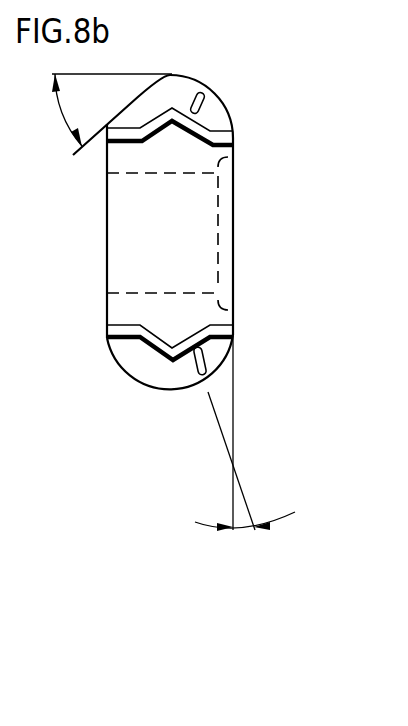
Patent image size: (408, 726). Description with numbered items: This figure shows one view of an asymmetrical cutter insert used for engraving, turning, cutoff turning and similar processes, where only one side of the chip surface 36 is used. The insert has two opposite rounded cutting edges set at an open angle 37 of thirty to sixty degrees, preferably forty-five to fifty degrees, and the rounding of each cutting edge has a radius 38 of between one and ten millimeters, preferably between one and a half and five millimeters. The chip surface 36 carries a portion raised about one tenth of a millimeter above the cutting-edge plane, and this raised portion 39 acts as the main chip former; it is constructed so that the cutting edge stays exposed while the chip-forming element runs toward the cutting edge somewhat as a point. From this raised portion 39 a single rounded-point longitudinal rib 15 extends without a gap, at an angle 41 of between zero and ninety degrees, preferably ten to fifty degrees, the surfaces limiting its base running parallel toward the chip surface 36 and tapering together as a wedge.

The longitudinal rib 15 is at (205, 103).
The chip surface 36 is at (155, 370).
The open angle 37 is at (62, 107).
The radius of the cutting-edge rounding 38 is at (195, 75).
The raised portion 39 is at (127, 300).
The angle 41 is at (242, 532).